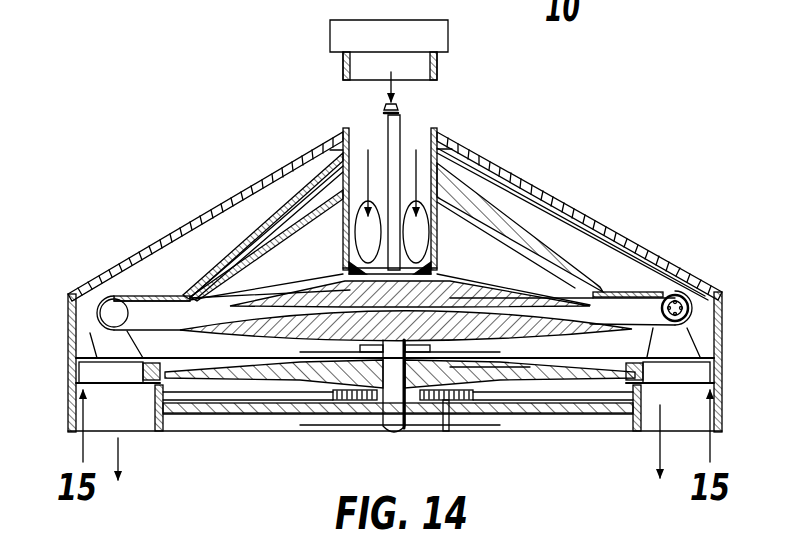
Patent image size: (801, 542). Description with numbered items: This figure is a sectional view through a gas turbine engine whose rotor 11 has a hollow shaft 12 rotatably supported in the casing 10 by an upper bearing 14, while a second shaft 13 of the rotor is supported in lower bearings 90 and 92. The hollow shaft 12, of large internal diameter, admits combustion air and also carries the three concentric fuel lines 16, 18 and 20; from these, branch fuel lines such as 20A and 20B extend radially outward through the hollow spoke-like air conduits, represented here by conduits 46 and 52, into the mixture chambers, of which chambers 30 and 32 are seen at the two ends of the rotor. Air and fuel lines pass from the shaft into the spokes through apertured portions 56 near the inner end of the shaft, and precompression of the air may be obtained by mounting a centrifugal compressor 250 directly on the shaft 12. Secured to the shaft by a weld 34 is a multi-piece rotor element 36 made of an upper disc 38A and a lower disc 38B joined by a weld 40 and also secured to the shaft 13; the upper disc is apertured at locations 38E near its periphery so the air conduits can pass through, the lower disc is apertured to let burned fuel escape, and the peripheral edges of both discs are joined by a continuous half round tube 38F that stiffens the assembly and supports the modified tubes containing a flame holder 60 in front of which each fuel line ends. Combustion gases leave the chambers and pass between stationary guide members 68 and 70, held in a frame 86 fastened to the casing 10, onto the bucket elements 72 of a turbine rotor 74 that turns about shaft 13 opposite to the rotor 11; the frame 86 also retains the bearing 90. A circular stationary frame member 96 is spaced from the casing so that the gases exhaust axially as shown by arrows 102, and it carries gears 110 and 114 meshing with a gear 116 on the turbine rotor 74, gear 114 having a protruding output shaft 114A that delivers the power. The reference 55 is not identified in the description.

The centrifugal compressor 250 is at (440, 32).
The fuel line 16 is at (389, 106).
The fuel line 18 is at (401, 111).
The fuel line 20 is at (401, 126).
The upper bearing 14 is at (343, 136).
The apertured portion 56 is at (328, 247).
The casing 10 is at (248, 190).
The hollow shaft 12 is at (453, 160).
The radial air conduit 52 is at (262, 256).
The branch fuel line 20B is at (244, 300).
The support wedge 55 is at (540, 216).
The radial air conduit 46 is at (540, 212).
The rotor 11 is at (613, 282).
The apertured location 38E is at (618, 278).
The upper disc shaped element 38A is at (152, 297).
The mixture chamber 32 is at (113, 306).
The mixture chamber 30 is at (676, 297).
The half round tube 38F is at (96, 303).
The flame holder 60 is at (716, 297).
The branch fuel line 20A is at (556, 262).
The weld 34 is at (464, 262).
The lower disc shaped element 38B is at (537, 320).
The stationary guide member 68 is at (80, 335).
The stationary guide member 70 is at (137, 346).
The frame 86 is at (80, 348).
The bucket element 72 is at (128, 374).
The arrows 102 is at (118, 455).
The stationary frame member 96 is at (233, 417).
The turbine bucket rotor 74 is at (262, 416).
The gear 110 is at (283, 392).
The weld 40 is at (356, 372).
The gear 116 is at (381, 412).
The output shaft 114A is at (442, 406).
The lower bearing 92 is at (379, 428).
The second shaft 13 is at (447, 430).
The bearing 90 is at (452, 430).
The gear 114 is at (489, 336).
The multi-piece rotor element 36 is at (515, 396).